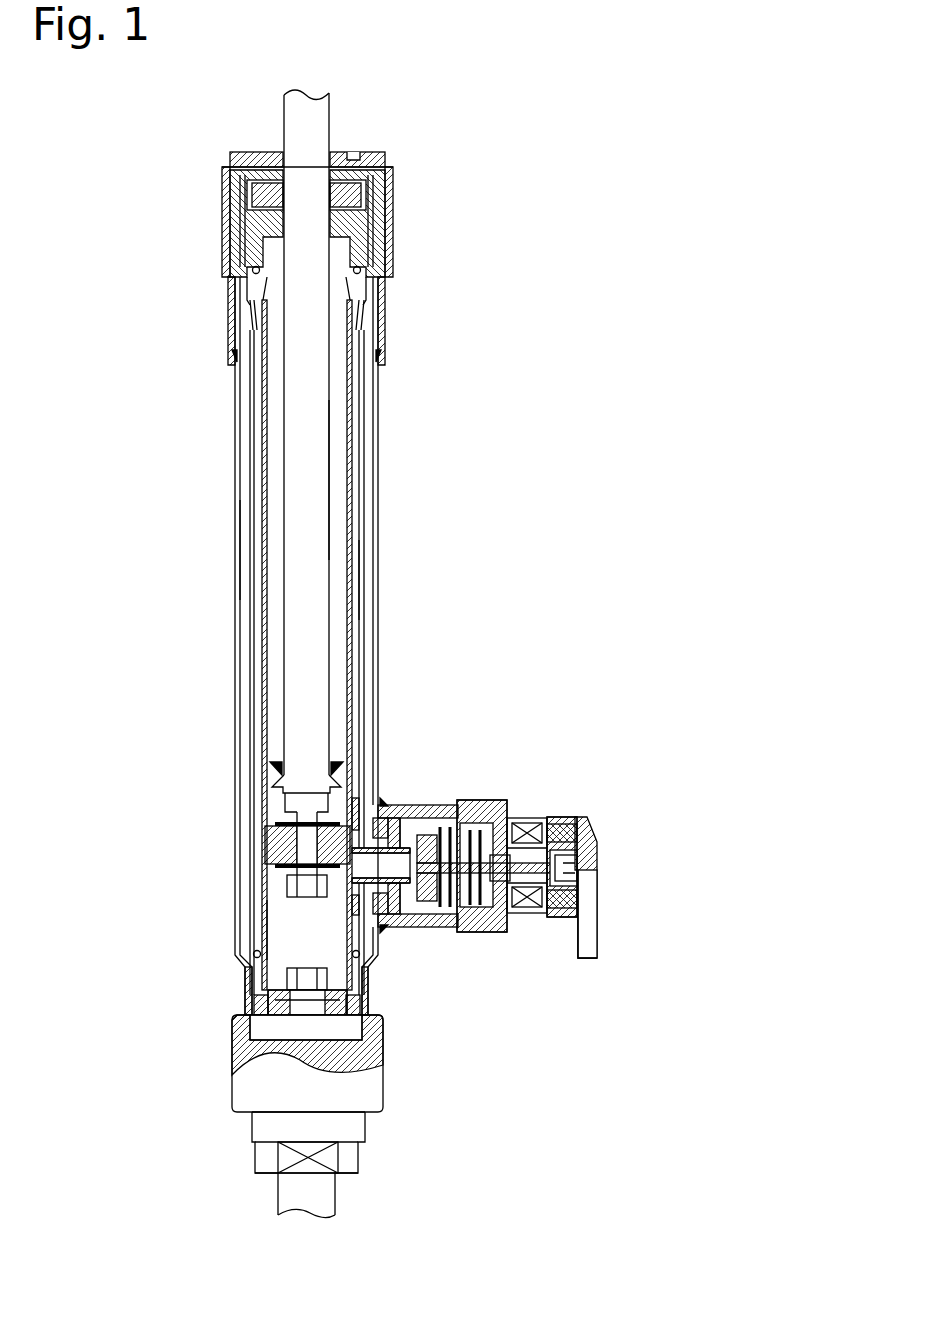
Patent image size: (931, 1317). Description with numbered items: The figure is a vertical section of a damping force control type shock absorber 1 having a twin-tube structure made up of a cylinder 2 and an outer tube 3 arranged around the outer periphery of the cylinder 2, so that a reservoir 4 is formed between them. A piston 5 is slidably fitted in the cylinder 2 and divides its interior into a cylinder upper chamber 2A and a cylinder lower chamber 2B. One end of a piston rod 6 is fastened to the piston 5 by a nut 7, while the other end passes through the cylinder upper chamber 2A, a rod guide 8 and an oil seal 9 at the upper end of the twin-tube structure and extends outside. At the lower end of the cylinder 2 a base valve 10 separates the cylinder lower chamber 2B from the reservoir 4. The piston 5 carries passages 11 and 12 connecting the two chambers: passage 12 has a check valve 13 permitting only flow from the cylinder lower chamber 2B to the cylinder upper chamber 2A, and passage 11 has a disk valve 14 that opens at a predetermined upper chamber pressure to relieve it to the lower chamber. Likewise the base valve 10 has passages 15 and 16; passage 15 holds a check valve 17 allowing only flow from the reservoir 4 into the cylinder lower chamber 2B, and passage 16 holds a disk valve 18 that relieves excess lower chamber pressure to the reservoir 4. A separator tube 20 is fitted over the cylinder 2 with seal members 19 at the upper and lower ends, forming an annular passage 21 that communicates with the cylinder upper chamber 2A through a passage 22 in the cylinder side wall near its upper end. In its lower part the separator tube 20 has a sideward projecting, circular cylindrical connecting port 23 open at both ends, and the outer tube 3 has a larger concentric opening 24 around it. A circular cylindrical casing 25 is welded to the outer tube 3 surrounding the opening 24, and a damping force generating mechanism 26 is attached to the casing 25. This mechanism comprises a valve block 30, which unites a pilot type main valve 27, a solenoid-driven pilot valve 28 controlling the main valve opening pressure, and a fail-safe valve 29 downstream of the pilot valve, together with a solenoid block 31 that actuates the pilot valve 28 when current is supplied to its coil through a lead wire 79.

The damping force control type shock absorber 1 is at (508, 247).
The cylinder 2 is at (353, 440).
The cylinder upper chamber 2A is at (340, 478).
The cylinder lower chamber 2B is at (298, 922).
The outer tube 3 is at (362, 500).
The reservoir 4 is at (237, 443).
The piston 5 is at (265, 848).
The piston rod 6 is at (316, 115).
The nut 7 is at (295, 893).
The rod guide 8 is at (250, 243).
The oil seal 9 is at (383, 156).
The base valve 10 is at (375, 1018).
The passage 11 is at (262, 823).
The passage 12 is at (378, 803).
The check valve 13 is at (346, 818).
The disk valve 14 is at (272, 868).
The passage 15 is at (250, 1010).
The passage 16 is at (383, 1050).
The check valve 17 is at (252, 980).
The disk valve 18 is at (350, 1093).
The seal members 19 is at (252, 272).
The separator tube 20 is at (238, 546).
The annular passage 21 is at (358, 577).
The passage 22 is at (365, 320).
The connecting port 23 is at (414, 818).
The opening 24 is at (392, 932).
The casing 25 is at (422, 807).
The damping force generating mechanism 26 is at (567, 815).
The main valve 27 is at (463, 813).
The pilot valve 28 is at (513, 817).
The fail-safe valve 29 is at (539, 805).
The valve block 30 is at (445, 930).
The solenoid block 31 is at (574, 810).
The lead wire 79 is at (598, 935).